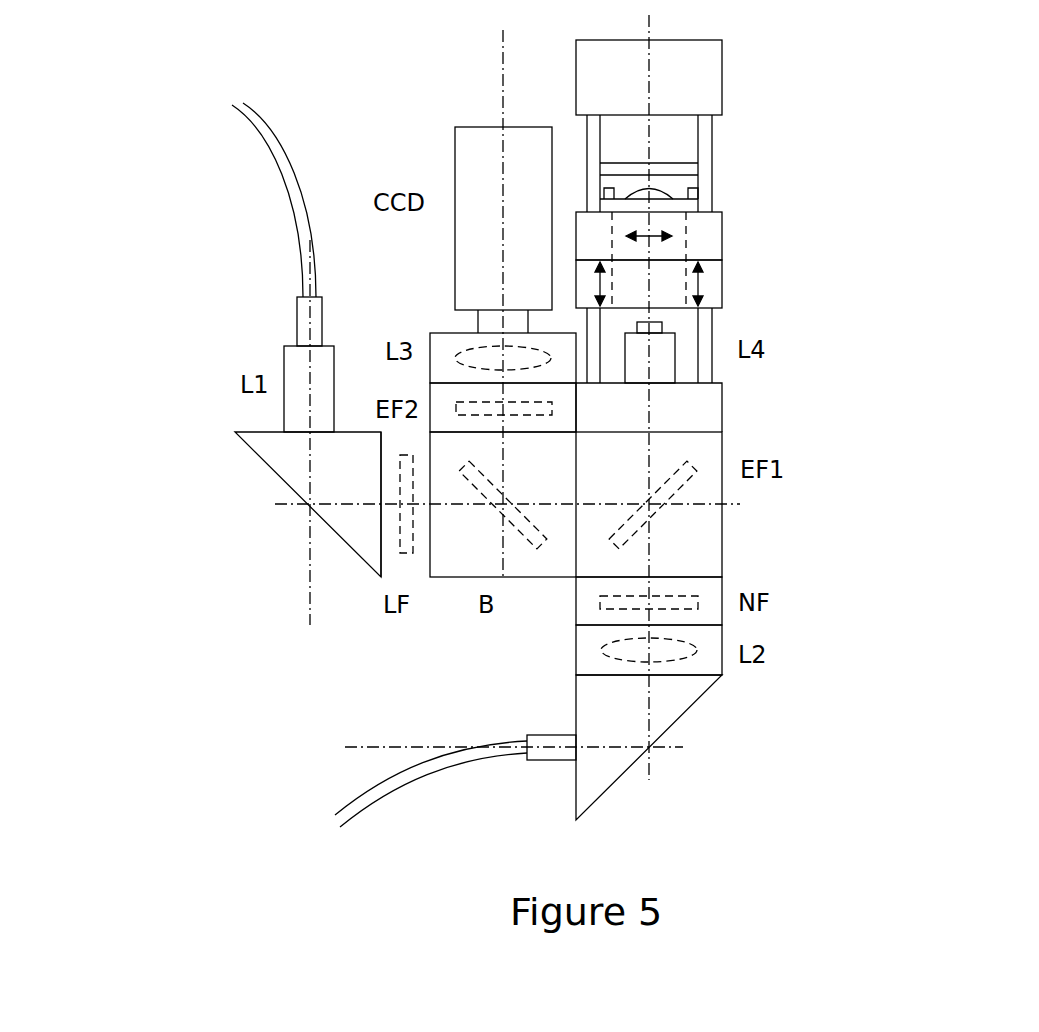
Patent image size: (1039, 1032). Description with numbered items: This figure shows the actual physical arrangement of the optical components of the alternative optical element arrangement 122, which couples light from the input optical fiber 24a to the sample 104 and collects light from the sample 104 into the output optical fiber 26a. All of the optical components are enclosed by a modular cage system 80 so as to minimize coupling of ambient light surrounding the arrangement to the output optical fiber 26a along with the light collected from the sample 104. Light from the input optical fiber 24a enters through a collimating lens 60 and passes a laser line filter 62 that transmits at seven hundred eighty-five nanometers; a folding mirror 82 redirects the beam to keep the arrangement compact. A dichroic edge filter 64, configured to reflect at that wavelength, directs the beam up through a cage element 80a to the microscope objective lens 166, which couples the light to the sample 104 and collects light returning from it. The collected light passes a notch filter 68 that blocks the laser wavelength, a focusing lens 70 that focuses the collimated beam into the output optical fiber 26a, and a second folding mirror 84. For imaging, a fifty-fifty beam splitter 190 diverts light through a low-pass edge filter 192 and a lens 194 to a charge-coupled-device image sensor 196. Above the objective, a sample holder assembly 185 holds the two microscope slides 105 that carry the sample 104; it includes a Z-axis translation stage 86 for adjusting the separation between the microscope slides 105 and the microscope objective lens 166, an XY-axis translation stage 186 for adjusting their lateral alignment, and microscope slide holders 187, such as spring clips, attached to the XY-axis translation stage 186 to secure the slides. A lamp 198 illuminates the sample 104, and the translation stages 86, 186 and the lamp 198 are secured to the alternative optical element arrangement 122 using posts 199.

The sample holder assembly 185 is at (892, 137).
The lamp 198 is at (722, 80).
The posts 199 is at (712, 168).
The microscope slide holders 187 is at (700, 194).
The sample 104 is at (652, 192).
The microscope slides 105 is at (700, 207).
The XY-axis translation stage 186 is at (722, 244).
The Z-axis translation stage 86 is at (722, 290).
The microscope objective lens 166 is at (660, 360).
The cage element 80a is at (722, 408).
The modular cage system 80 is at (722, 447).
The dichroic edge filter 64 is at (656, 515).
The 50:50 beam splitter 190 is at (530, 552).
The laser line filter 62 is at (407, 550).
The folding mirror 82 is at (352, 556).
The collimating lens 60 is at (284, 410).
The input optical fiber 24a is at (286, 182).
The CCD image sensor 196 is at (455, 158).
The lens 194 is at (465, 357).
The low-pass edge filter 192 is at (460, 407).
The notch filter 68 is at (690, 598).
The focusing lens 70 is at (672, 655).
The folding mirror 84 is at (615, 790).
The output optical fiber 26a is at (372, 778).
The alternative optical element arrangement 122 is at (255, 580).